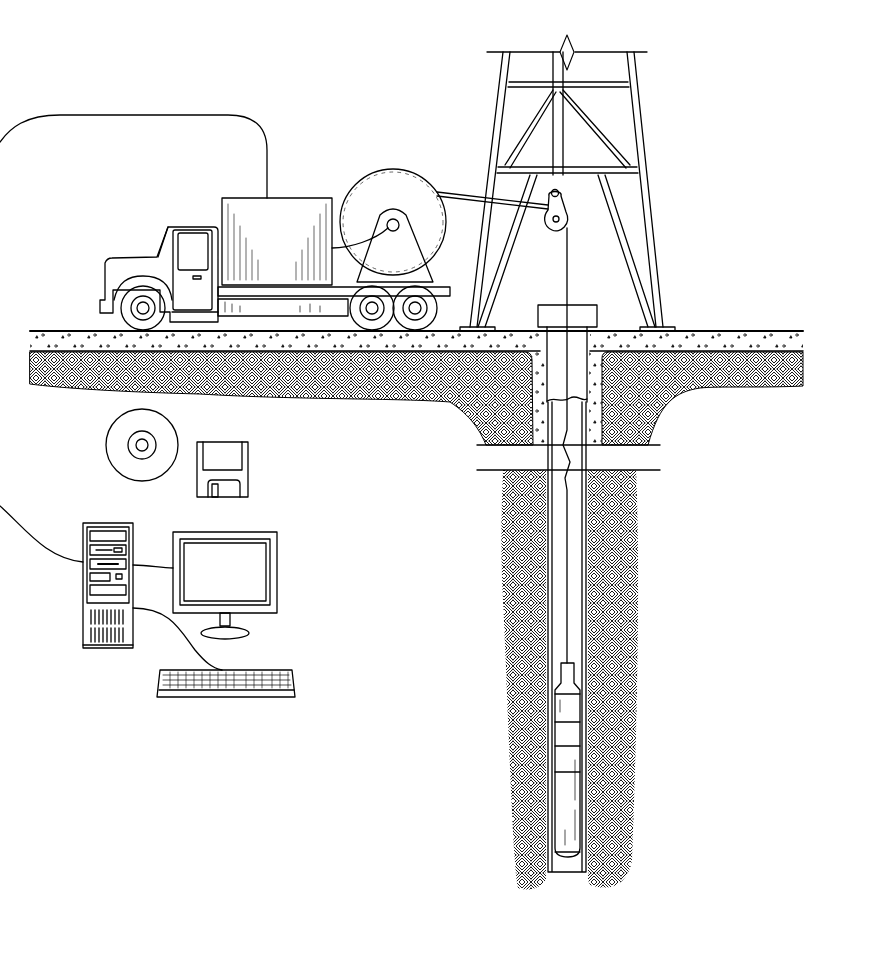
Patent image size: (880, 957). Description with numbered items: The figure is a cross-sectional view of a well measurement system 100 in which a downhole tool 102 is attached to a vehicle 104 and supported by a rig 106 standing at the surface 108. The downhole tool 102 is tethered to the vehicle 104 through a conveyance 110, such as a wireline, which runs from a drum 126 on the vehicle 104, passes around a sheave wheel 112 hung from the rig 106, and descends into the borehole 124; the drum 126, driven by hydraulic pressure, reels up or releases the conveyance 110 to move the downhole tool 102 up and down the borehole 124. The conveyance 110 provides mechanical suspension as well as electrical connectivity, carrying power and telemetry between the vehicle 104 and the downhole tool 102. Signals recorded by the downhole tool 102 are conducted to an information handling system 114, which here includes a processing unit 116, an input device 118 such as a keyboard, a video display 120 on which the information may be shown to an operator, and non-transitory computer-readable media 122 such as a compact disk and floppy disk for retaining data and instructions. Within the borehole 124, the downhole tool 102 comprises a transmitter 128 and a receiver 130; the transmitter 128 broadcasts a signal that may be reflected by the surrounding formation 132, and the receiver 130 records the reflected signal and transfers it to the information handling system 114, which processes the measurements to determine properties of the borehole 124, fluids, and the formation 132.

The well measurement system 100 is at (101, 46).
The downhole tool 102 is at (538, 734).
The vehicle 104 is at (285, 198).
The rig 106 is at (650, 188).
The surface 108 is at (706, 331).
The conveyance 110 is at (565, 548).
The sheave wheel 112 is at (553, 238).
The information handling system 114 is at (102, 722).
The processing unit 116 is at (105, 523).
The input device 118 is at (296, 683).
The video display 120 is at (225, 532).
The non-transitory computer-readable media 122 is at (218, 442).
The borehole 124 is at (650, 430).
The drum 126 is at (393, 171).
The transmitter 128 is at (572, 733).
The receiver 130 is at (572, 758).
The formation 132 is at (722, 530).